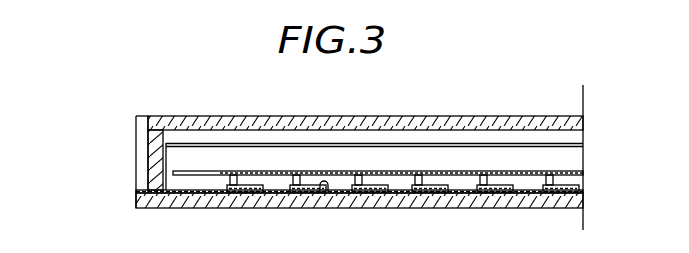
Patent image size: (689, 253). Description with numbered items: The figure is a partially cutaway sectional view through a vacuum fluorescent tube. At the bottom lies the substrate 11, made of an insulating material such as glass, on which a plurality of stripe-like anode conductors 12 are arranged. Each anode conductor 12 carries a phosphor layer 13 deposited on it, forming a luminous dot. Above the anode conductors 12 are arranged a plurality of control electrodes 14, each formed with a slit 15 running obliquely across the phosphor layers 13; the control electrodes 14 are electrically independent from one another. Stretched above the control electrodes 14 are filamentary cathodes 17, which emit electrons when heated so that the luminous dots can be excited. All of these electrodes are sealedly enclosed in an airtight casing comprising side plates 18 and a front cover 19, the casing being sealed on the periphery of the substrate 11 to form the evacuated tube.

The substrate 11 is at (160, 204).
The anode conductors 12 is at (278, 193).
The phosphor layer 13 is at (324, 186).
The control electrodes 14 is at (295, 172).
The slit 15 is at (400, 172).
The filamentary cathodes 17 is at (252, 142).
The side plates 18 is at (150, 160).
The front cover 19 is at (188, 121).